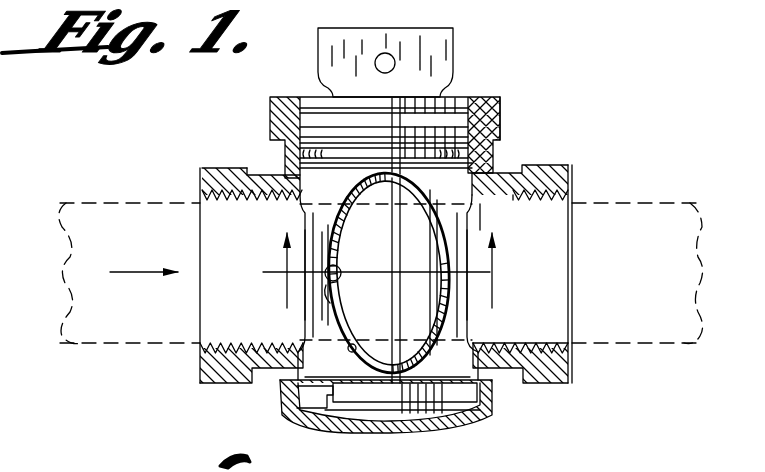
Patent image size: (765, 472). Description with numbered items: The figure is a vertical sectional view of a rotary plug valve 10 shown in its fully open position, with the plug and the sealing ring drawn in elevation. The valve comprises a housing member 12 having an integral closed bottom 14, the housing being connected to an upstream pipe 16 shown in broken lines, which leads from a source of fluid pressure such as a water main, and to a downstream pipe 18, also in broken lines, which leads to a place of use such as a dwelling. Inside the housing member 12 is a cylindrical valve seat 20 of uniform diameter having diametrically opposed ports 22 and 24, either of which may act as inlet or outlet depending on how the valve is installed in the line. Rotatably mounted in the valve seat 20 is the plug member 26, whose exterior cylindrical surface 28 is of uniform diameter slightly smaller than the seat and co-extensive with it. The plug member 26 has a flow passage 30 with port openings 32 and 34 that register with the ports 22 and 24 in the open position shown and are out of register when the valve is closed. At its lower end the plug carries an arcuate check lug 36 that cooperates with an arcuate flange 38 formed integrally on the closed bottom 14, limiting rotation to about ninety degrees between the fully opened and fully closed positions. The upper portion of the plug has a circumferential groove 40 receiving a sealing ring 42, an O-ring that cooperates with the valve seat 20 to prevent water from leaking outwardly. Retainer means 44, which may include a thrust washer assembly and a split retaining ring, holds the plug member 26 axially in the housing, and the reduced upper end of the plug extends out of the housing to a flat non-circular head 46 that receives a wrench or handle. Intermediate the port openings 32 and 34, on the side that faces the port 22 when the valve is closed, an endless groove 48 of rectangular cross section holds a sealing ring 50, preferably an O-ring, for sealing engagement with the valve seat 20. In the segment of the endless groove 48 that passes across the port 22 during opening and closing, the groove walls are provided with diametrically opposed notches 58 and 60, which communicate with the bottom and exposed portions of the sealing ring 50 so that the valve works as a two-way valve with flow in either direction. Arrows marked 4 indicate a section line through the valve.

The rotary plug valve 10 is at (524, 100).
The housing member 12 is at (497, 157).
The closed bottom 14 is at (430, 433).
The upstream pipe 16 is at (110, 198).
The downstream pipe 18 is at (667, 193).
The valve seat 20 is at (290, 177).
The port 22 is at (283, 200).
The port 24 is at (492, 205).
The plug member 26 is at (449, 86).
The exterior cylindrical surface 28 is at (475, 345).
The flow passage 30 is at (393, 205).
The port opening 32 is at (307, 308).
The port opening 34 is at (470, 307).
The check lug 36 is at (482, 398).
The arcuate flange 38 is at (323, 405).
The circumferential groove 40 is at (505, 177).
The sealing ring 42 is at (503, 147).
The retainer means 44 is at (482, 100).
The head 46 is at (455, 38).
The endless groove 48 is at (349, 350).
The sealing ring 50 is at (402, 370).
The outer notch 58 is at (337, 318).
The inner notch 60 is at (343, 268).
The section line 4- 4 is at (388, 270).